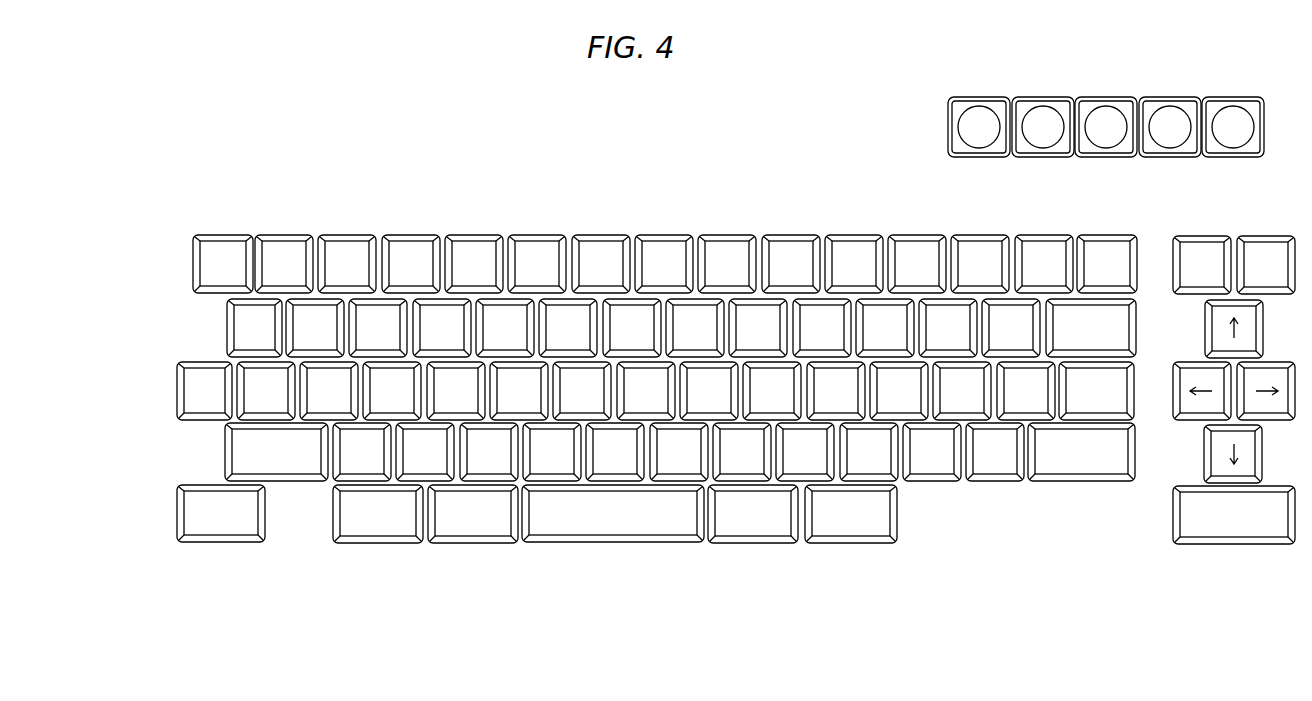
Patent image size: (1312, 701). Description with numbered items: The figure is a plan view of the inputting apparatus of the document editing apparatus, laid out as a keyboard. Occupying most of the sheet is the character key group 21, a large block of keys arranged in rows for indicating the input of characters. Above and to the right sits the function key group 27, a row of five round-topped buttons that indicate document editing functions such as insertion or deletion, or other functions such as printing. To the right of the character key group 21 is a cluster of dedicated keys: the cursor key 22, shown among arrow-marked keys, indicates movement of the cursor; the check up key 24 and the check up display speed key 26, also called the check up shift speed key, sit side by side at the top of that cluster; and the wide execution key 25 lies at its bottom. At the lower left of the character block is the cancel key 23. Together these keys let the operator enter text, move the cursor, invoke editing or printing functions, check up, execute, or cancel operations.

The character key group 21 is at (656, 237).
The cursor key 22 is at (1246, 327).
The cancel key 23 is at (205, 524).
The check up key 24 is at (1262, 256).
The execution key 25 is at (1205, 527).
The check up display speed key 26 is at (1194, 246).
The function key group 27 is at (1104, 97).